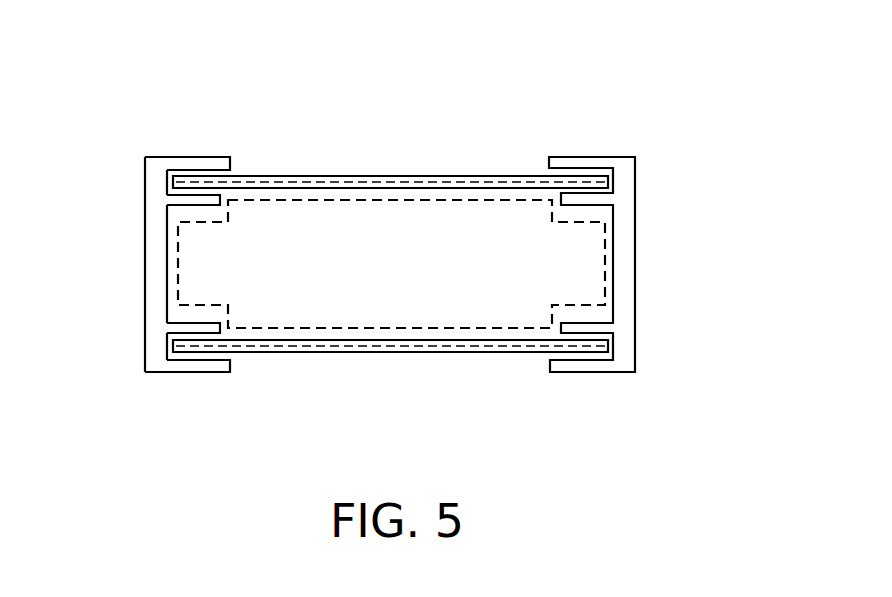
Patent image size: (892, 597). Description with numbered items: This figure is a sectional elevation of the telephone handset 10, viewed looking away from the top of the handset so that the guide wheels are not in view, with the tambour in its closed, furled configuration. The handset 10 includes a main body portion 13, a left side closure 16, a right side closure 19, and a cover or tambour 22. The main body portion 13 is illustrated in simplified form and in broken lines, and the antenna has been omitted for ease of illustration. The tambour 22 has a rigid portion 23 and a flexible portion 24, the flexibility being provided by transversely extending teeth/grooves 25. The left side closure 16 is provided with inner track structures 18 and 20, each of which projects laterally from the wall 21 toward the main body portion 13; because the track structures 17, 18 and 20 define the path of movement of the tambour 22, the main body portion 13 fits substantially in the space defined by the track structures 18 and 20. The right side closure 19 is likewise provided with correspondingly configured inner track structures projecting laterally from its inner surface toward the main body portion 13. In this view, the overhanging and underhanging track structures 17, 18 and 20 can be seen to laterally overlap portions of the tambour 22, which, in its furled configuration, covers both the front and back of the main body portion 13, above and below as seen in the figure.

The handset 10 is at (185, 75).
The main body portion 13 is at (460, 328).
The left side closure 16 is at (135, 232).
The track structures 17 is at (190, 158).
The inner track structure 18 is at (195, 204).
The right side closure 19 is at (645, 282).
The inner track structure 20 is at (195, 317).
The wall 21 is at (158, 275).
The tambour 22 is at (404, 165).
The rigid portion 23 is at (313, 345).
The flexible portion 24 is at (319, 176).
The teeth/grooves 25 is at (347, 182).